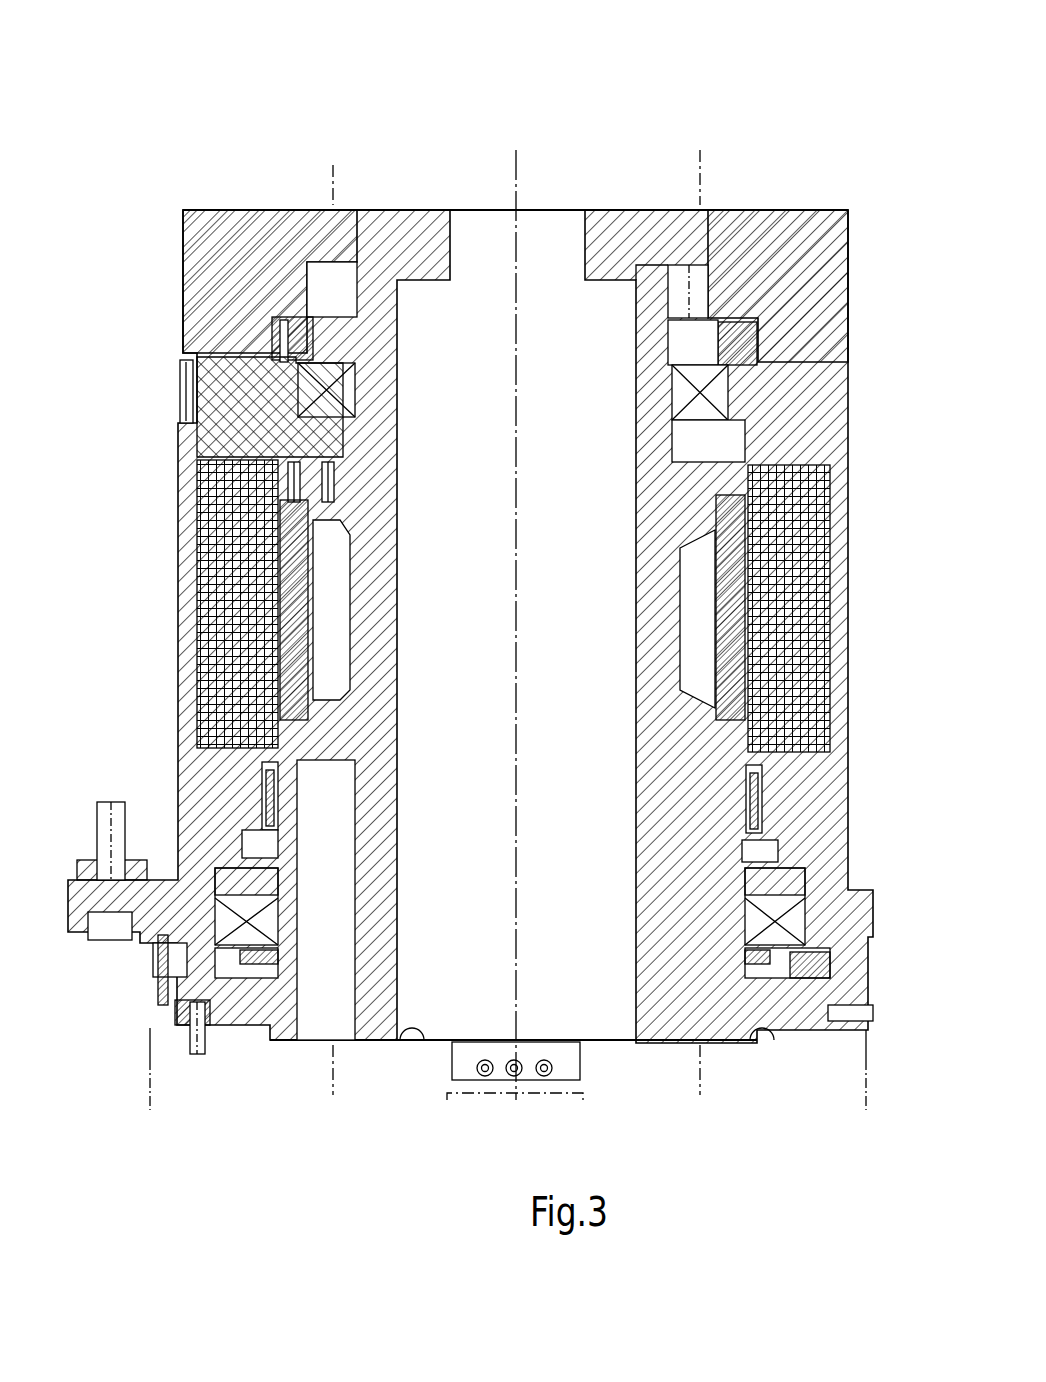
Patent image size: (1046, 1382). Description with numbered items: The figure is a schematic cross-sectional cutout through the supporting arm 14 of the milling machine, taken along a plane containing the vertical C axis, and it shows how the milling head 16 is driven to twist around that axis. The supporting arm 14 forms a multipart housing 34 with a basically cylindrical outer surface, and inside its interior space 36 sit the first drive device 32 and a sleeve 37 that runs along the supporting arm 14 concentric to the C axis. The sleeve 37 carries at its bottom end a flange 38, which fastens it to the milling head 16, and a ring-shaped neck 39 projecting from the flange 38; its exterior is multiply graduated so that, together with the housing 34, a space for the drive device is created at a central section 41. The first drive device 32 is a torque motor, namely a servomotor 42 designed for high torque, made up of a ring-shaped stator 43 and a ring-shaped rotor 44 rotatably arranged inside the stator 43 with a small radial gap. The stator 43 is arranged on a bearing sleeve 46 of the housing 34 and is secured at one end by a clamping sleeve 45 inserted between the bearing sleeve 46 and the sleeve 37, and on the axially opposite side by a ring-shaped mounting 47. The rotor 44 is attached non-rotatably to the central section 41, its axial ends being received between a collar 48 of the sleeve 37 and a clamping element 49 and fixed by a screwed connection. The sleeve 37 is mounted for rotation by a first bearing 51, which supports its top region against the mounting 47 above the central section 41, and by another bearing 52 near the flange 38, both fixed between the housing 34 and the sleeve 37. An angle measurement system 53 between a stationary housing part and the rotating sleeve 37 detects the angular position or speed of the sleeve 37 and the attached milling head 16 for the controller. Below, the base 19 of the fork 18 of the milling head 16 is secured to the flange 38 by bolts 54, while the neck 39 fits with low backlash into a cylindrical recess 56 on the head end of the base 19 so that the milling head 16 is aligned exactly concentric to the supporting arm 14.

The supporting arm 14 is at (206, 160).
The milling head 16 is at (118, 1030).
The fork 18 is at (148, 1095).
The base 19 is at (348, 1098).
The first drive device 32 is at (253, 432).
The housing 34 is at (195, 475).
The interior space 36 is at (590, 656).
The sleeve 37 is at (375, 290).
The flange 38 is at (253, 1012).
The neck 39 is at (757, 1044).
The central section 41 is at (372, 590).
The servomotor 42 is at (285, 600).
The stator 43 is at (235, 540).
The rotor 44 is at (290, 565).
The clamping sleeve 45 is at (760, 800).
The bearing sleeve 46 is at (225, 745).
The mounting 47 is at (190, 408).
The collar 48 is at (305, 705).
The clamping element 49 is at (330, 492).
The first bearing 51 is at (720, 395).
The bearing 52 is at (790, 905).
The angle measurement system 53 is at (692, 312).
The bolts 54 is at (195, 1044).
The cylindrical recess 56 is at (415, 1046).